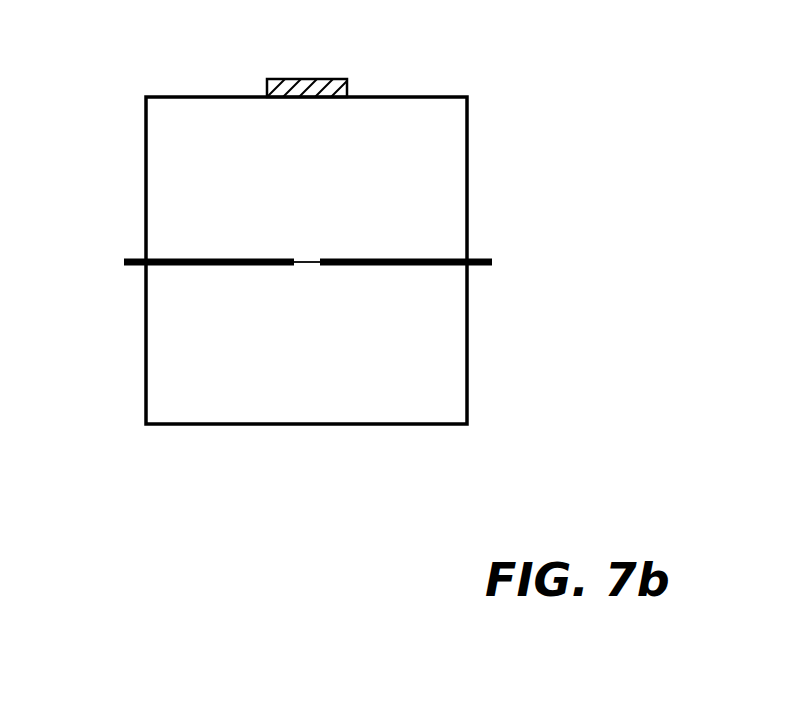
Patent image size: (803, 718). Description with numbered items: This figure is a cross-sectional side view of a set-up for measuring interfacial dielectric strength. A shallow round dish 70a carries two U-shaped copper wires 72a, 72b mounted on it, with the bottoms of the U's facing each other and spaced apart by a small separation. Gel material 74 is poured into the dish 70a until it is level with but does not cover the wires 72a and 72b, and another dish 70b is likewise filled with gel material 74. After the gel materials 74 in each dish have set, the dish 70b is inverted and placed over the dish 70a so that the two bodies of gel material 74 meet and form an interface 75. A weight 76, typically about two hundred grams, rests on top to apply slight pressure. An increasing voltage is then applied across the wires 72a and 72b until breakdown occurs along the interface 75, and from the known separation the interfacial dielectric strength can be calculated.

The shallow round dish 70a is at (467, 333).
The dish 70b is at (467, 150).
The U-shaped copper wire 72a is at (137, 258).
The U-shaped copper wire 72b is at (490, 258).
The gel material 74 is at (173, 142).
The interface 75 is at (307, 263).
The weight 76 is at (327, 78).